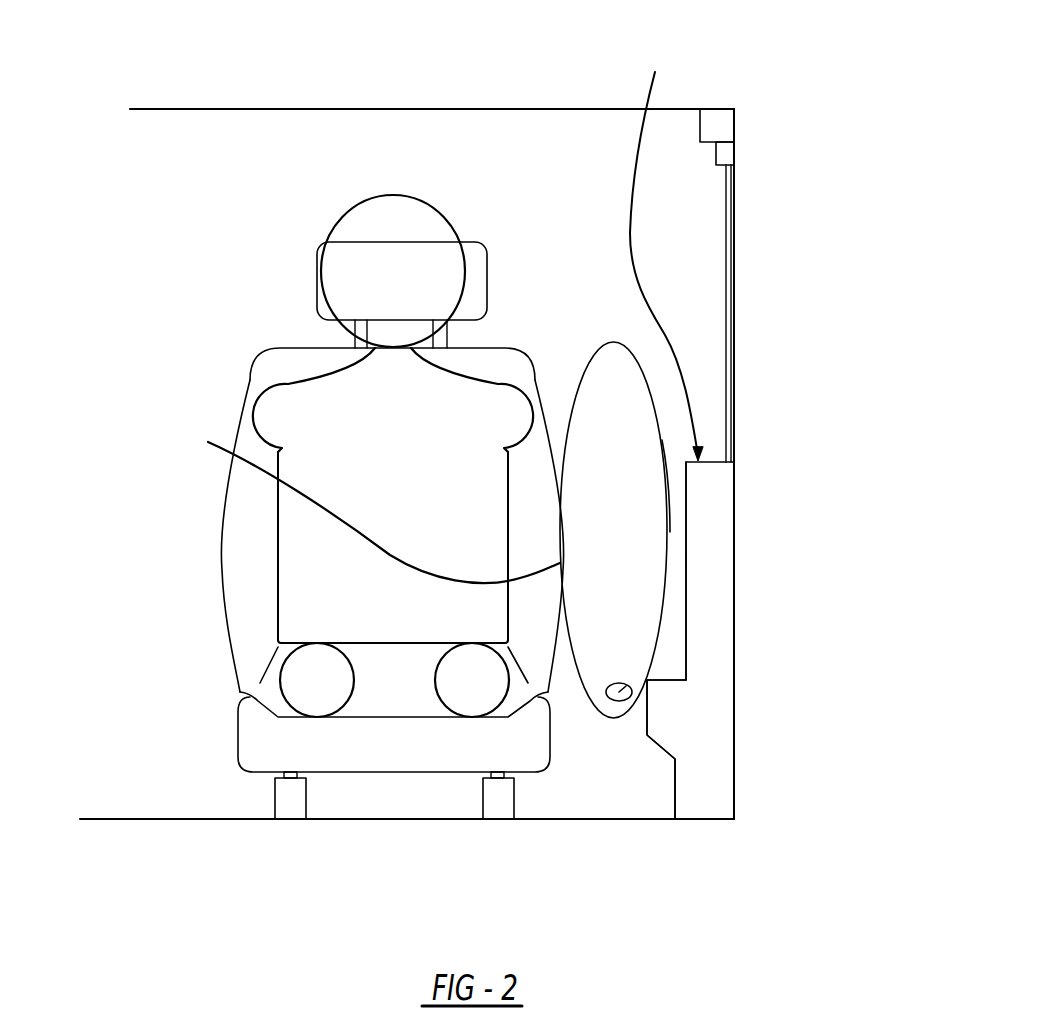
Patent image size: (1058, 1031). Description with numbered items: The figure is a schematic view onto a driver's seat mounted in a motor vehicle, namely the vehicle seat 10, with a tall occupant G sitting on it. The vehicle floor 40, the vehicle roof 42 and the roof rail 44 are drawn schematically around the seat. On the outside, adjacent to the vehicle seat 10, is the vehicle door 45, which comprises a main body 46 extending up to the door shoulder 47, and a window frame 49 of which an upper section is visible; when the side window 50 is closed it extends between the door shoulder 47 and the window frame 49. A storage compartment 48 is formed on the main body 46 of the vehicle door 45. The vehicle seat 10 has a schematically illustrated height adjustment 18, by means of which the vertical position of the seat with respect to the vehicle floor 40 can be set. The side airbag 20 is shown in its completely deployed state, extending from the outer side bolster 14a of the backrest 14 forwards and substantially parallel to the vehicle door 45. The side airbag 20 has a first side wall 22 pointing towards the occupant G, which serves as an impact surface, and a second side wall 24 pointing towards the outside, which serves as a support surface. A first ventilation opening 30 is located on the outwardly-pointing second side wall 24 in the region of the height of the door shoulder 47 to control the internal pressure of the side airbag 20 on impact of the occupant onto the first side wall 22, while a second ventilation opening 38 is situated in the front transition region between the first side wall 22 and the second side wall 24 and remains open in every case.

The vehicle seat 10 is at (275, 655).
The backrest 14 is at (380, 453).
The outer side bolster 14a is at (538, 513).
The height adjustment 18 is at (298, 802).
The side airbag 20 is at (618, 403).
The first side wall 22 is at (370, 505).
The second side wall 24 is at (670, 532).
The first ventilation opening 30 is at (667, 480).
The second ventilation opening 38 is at (620, 693).
The vehicle floor 40 is at (127, 820).
The vehicle roof 42 is at (418, 108).
The roof rail 44 is at (717, 113).
The vehicle door 45 is at (728, 515).
The main body 46 is at (717, 603).
The door shoulder 47 is at (666, 252).
The storage compartment 48 is at (660, 692).
The window frame 49 is at (723, 150).
The side window 50 is at (735, 295).
The tall occupant G is at (422, 600).